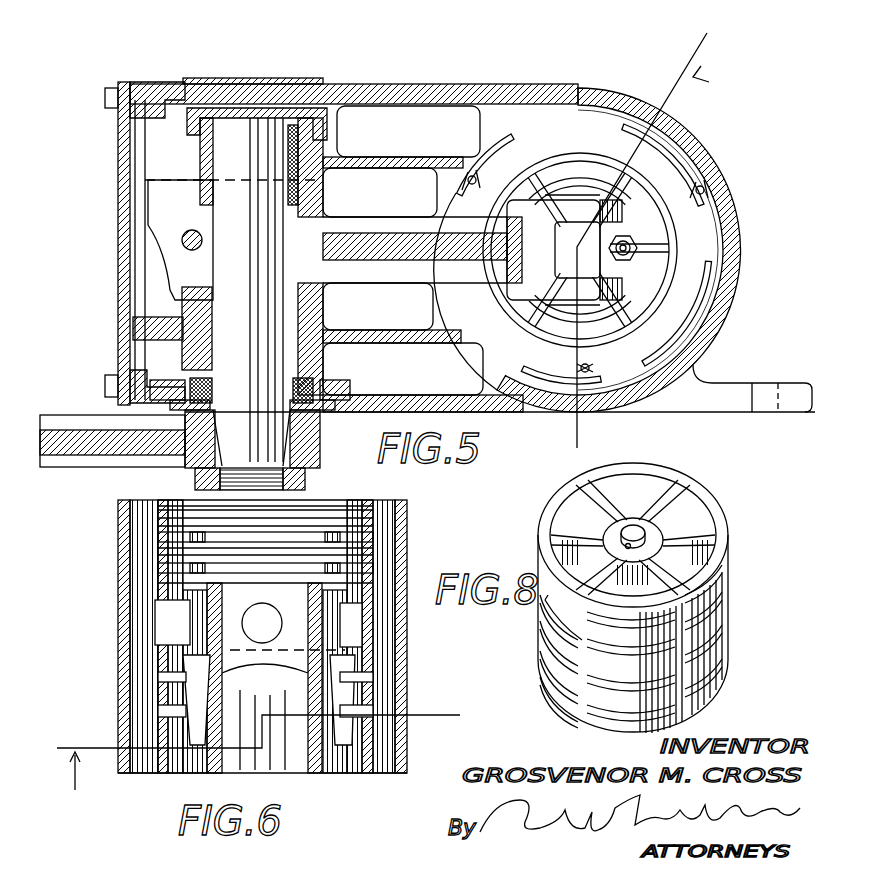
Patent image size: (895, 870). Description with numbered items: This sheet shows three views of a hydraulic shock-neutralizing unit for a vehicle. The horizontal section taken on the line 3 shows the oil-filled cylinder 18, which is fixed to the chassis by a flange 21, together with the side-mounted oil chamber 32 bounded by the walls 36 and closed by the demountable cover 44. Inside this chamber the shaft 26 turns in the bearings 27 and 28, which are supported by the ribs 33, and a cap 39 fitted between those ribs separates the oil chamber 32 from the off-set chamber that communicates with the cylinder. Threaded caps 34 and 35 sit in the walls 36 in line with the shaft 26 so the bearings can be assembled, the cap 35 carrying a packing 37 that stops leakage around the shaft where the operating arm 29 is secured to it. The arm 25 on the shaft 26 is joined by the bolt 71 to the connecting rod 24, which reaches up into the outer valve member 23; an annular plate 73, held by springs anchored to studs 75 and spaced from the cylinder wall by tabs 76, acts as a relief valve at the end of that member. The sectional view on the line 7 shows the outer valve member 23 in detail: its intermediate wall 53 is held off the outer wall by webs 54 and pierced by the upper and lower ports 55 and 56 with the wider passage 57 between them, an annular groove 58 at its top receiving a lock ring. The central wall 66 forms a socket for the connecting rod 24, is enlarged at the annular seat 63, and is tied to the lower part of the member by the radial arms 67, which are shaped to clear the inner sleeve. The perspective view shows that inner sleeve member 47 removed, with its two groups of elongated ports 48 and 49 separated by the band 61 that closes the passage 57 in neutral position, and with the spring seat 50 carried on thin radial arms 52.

In FIG. 5, the section line 3- 3 is at (656, 231).
In FIG. 6, the section line 7- 7 is at (272, 736).
In FIG. 5, the cylinder 18 is at (706, 153).
In FIG. 5, the flange 21 is at (745, 385).
In FIG. 6, the outer valve member 23 is at (120, 622).
In FIG. 5, the connecting rod 24 is at (600, 265).
In FIG. 5, the arm 25 is at (360, 235).
In FIG. 5, the shaft 26 is at (245, 130).
In FIG. 5, the bearing 27 is at (330, 148).
In FIG. 5, the bearing 28 is at (330, 330).
In FIG. 5, the operating arm 29 is at (52, 428).
In FIG. 5, the oil chamber 32 is at (432, 112).
In FIG. 5, the flanges or ribs 33 is at (140, 152).
In FIG. 5, the threaded cap 34 is at (312, 80).
In FIG. 5, the threaded cap 35 is at (325, 412).
In FIG. 5, the walls of the oil chamber 36 is at (392, 86).
In FIG. 5, the packing 37 is at (212, 392).
In FIG. 5, the cap 39 is at (140, 220).
In FIG. 5, the wall or cover 44 is at (118, 258).
In FIG. 5, the inner sleeve member 47 is at (582, 153).
In FIG. 8, the inner sleeve member 47 is at (725, 560).
In FIG. 8, the elongated openings or ports 48 is at (552, 600).
In FIG. 8, the elongated openings or ports 49 is at (722, 684).
In FIG. 8, the seat 50 is at (655, 522).
In FIG. 8, the radial arms 52 is at (665, 525).
In FIG. 6, the intermediate wall 53 is at (160, 522).
In FIG. 6, the ribs or webs 54 is at (140, 660).
In FIG. 6, the elongated ports 55 is at (165, 566).
In FIG. 6, the elongated ports 56 is at (160, 708).
In FIG. 6, the wider opening or passage 57 is at (160, 615).
In FIG. 6, the annular groove 58 is at (163, 506).
In FIG. 8, the band or zone 61 is at (707, 636).
In FIG. 6, the annular seat 63 is at (322, 645).
In FIG. 6, the central wall 66 is at (310, 745).
In FIG. 5, the radial arms or webs 67 is at (545, 180).
In FIG. 6, the radial arms or webs 67 is at (190, 775).
In FIG. 5, the bolt 71 is at (635, 258).
In FIG. 5, the annular plate 73 is at (712, 215).
In FIG. 5, the studs 75 is at (475, 176).
In FIG. 5, the extensions or tabs 76 is at (516, 120).